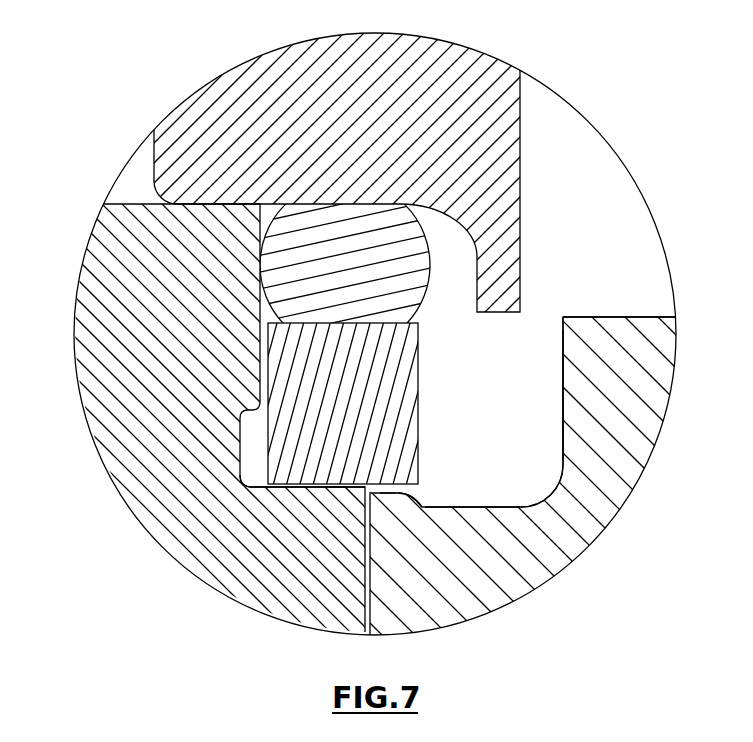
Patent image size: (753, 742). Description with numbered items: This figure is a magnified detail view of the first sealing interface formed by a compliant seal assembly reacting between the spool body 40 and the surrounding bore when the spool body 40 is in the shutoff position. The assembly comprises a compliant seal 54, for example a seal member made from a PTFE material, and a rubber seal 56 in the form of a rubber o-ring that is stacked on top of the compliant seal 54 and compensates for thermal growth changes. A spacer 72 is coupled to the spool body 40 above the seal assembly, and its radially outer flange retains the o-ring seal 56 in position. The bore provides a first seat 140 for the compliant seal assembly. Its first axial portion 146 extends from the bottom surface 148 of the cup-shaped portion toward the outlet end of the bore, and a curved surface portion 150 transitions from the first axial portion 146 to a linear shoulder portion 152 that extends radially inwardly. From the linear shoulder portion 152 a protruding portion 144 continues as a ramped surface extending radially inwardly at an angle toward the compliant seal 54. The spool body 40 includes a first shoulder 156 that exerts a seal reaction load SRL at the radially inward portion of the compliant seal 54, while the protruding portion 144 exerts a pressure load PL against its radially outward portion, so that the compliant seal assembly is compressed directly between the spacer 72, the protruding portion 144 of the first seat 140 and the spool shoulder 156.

The spool body 40 is at (93, 373).
The spacer 72 is at (512, 117).
The rubber seal 56 is at (405, 288).
The compliant seal 54 is at (413, 410).
The first seat 140 is at (543, 504).
The bottom surface 148 is at (600, 317).
The first axial portion 146 is at (563, 385).
The curved surface portion 150 is at (547, 480).
The linear shoulder portion 152 is at (468, 505).
The protruding portion 144 is at (420, 493).
The first shoulder 156 is at (262, 490).
The seal reaction load SRL is at (339, 491).
The pressure load PL is at (391, 497).